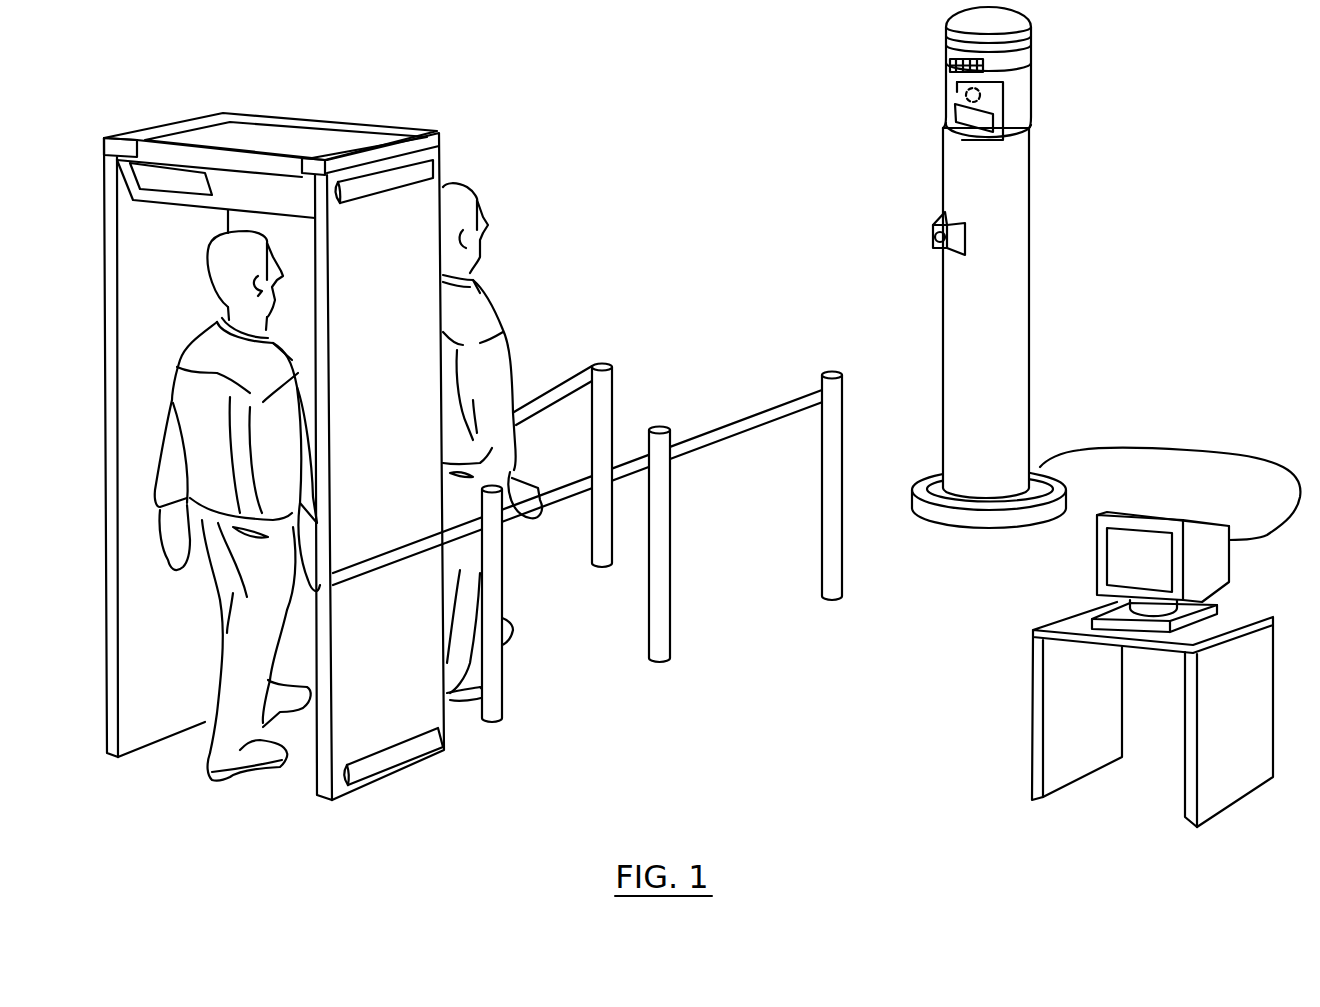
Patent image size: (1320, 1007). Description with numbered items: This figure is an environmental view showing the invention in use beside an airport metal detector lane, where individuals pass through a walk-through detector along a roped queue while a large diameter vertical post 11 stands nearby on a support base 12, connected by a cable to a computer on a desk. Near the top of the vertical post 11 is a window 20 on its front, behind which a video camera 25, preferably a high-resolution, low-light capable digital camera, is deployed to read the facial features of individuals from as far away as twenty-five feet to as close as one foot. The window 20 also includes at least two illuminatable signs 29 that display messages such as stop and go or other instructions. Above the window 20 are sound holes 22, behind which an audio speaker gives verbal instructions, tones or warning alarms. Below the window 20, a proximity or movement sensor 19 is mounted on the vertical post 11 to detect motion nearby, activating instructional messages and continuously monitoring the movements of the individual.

The vertical post 11 is at (1008, 338).
The support base 12 is at (957, 517).
The proximity or movement sensor 19 is at (931, 243).
The window 20 is at (958, 97).
The sound holes 22 is at (983, 70).
The video camera 25 is at (977, 91).
The illuminatable signs 29 is at (980, 122).